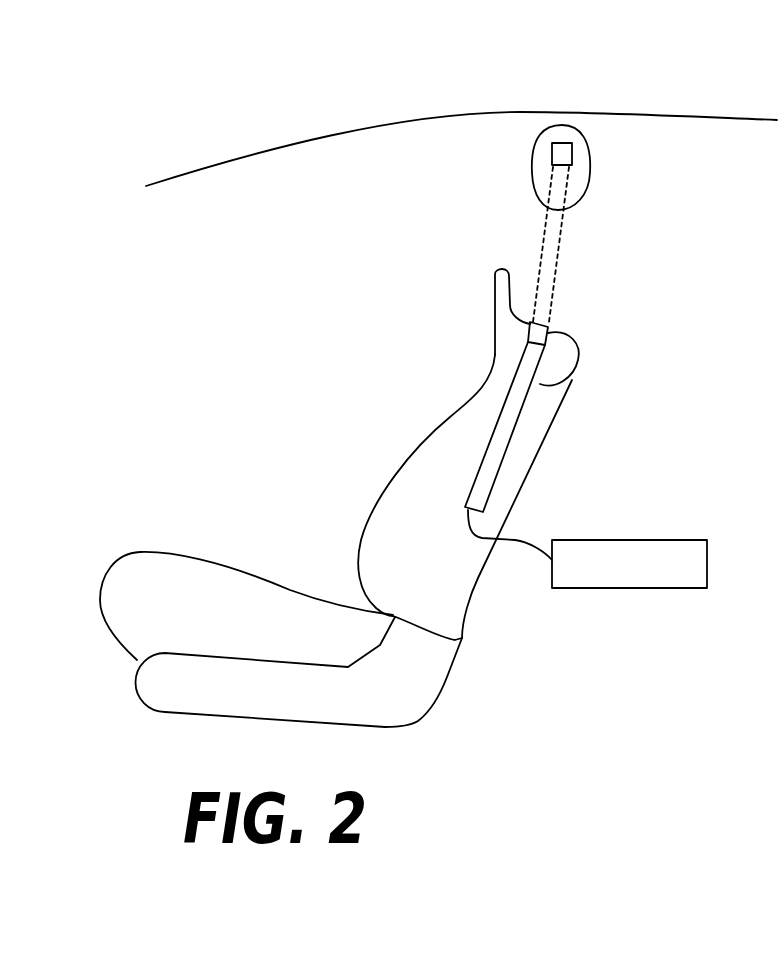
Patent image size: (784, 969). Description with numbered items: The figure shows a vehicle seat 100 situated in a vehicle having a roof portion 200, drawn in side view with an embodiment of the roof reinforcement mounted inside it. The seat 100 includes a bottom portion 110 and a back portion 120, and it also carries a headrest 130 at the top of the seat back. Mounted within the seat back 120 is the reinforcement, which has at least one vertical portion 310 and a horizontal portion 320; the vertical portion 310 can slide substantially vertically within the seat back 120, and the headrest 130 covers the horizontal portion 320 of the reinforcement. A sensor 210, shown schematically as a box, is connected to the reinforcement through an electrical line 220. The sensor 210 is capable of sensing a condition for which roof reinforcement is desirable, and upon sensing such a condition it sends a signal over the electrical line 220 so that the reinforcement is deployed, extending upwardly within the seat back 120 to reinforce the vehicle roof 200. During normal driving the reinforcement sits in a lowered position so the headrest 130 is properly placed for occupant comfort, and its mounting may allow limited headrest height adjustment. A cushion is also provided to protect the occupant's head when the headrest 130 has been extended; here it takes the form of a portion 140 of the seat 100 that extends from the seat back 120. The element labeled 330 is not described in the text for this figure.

The vehicle seat 100 is at (321, 502).
The bottom portion 110 is at (125, 610).
The back portion 120 is at (452, 590).
The headrest 130 is at (583, 187).
The portion of the seat 140 is at (493, 313).
The roof portion 200 is at (350, 121).
The sensor 210 is at (618, 588).
The electrical line 220 is at (523, 542).
The vertical portion 310 is at (566, 268).
The horizontal portion 320 is at (562, 157).
The sensor electrode strip 330 is at (573, 378).